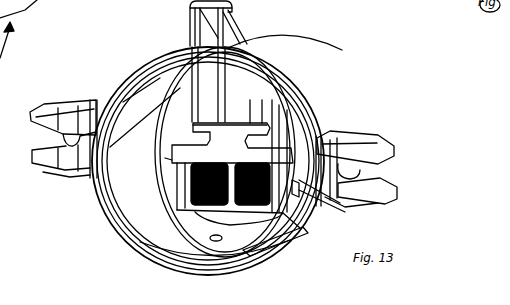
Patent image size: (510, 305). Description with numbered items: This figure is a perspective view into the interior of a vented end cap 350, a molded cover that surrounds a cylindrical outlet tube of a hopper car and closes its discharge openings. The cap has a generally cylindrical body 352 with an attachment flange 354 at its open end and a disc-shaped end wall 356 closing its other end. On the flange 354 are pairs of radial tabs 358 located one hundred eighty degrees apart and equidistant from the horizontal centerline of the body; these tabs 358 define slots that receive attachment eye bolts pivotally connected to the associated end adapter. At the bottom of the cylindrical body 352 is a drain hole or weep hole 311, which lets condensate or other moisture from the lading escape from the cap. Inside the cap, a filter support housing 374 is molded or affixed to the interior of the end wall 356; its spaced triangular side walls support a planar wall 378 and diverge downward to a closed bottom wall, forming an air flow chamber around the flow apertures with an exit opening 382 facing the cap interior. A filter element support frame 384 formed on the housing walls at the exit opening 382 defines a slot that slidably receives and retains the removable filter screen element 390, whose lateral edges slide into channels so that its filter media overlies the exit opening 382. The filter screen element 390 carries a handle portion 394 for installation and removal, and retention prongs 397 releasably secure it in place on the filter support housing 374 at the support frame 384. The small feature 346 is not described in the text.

The drain hole 311 is at (165, 257).
The aperture 346 is at (190, 231).
The vented end cap 350 is at (380, 61).
The cylindrical body 352 is at (235, 152).
The attachment flange 354 is at (286, 33).
The disc-shaped end wall 356 is at (141, 84).
The radial tabs 358 is at (234, 153).
The filter support housing 374 is at (191, 70).
The planar wall 378 is at (305, 85).
The exit opening 382 is at (215, 261).
The filter element support frame 384 is at (188, 190).
The filter screen element 390 is at (229, 117).
The handle portion 394 is at (258, 104).
The retention prongs 397 is at (203, 231).